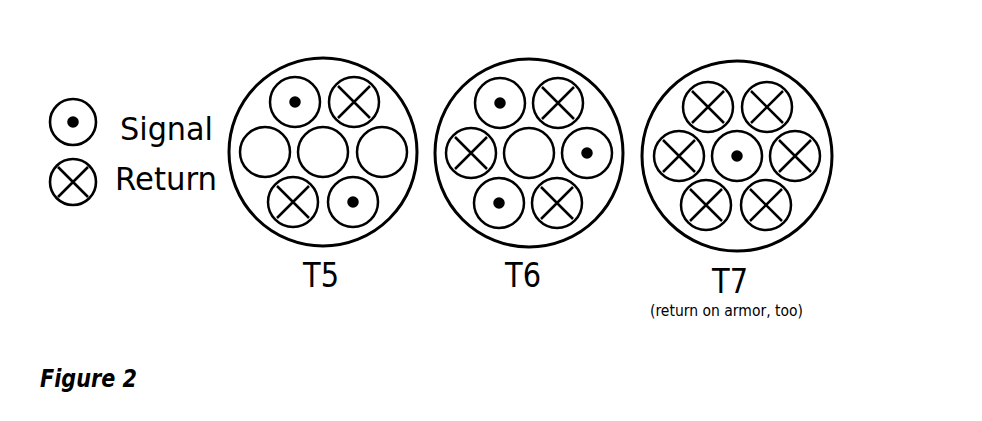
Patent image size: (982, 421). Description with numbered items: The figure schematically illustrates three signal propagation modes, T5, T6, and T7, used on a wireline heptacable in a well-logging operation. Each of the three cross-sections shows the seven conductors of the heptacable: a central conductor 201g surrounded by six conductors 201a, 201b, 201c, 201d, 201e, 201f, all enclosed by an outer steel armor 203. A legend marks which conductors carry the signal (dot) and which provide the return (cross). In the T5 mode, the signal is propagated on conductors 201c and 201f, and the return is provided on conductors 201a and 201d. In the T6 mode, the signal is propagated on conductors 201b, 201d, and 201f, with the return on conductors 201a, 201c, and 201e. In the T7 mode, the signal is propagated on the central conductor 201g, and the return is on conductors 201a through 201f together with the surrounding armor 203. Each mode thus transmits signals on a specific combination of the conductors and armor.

The armor 203 is at (323, 58).
The conductor 201a is at (363, 80).
The conductor 201b is at (393, 127).
The conductor 201c is at (365, 221).
The conductor 201d is at (280, 221).
The conductor 201e is at (242, 169).
The conductor 201f is at (278, 86).
The conductor 201g is at (298, 140).